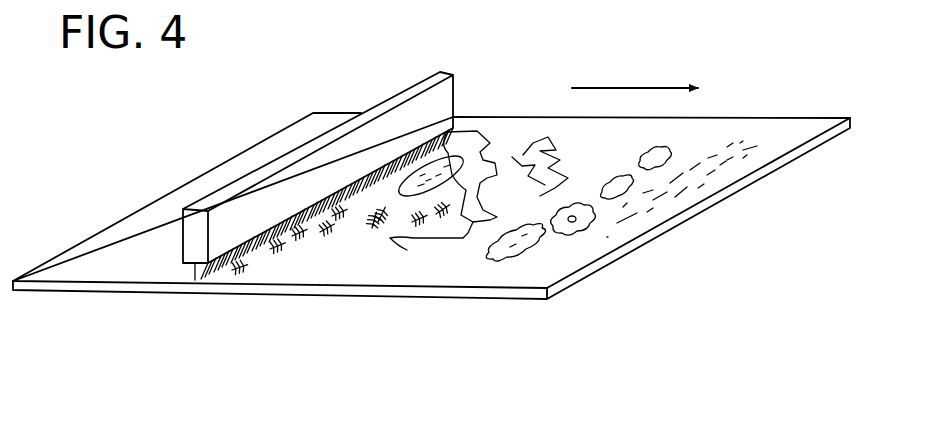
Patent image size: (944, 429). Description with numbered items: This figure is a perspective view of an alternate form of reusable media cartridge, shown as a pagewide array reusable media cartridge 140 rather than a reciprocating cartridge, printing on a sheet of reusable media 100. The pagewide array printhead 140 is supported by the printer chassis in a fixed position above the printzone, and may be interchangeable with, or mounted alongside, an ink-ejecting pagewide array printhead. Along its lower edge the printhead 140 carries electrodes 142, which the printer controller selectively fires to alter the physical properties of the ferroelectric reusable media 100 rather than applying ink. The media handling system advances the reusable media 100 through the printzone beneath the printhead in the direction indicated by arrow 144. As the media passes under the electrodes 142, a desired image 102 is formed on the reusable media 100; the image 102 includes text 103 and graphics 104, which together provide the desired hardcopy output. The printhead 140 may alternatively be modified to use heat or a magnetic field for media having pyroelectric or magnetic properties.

The reusable media 100 is at (780, 132).
The image 102 is at (582, 240).
The text 103 is at (685, 182).
The graphics 104 is at (410, 243).
The pagewide array reusable media cartridge 140 is at (430, 79).
The electrodes 142 is at (462, 131).
The arrow 144 is at (633, 85).